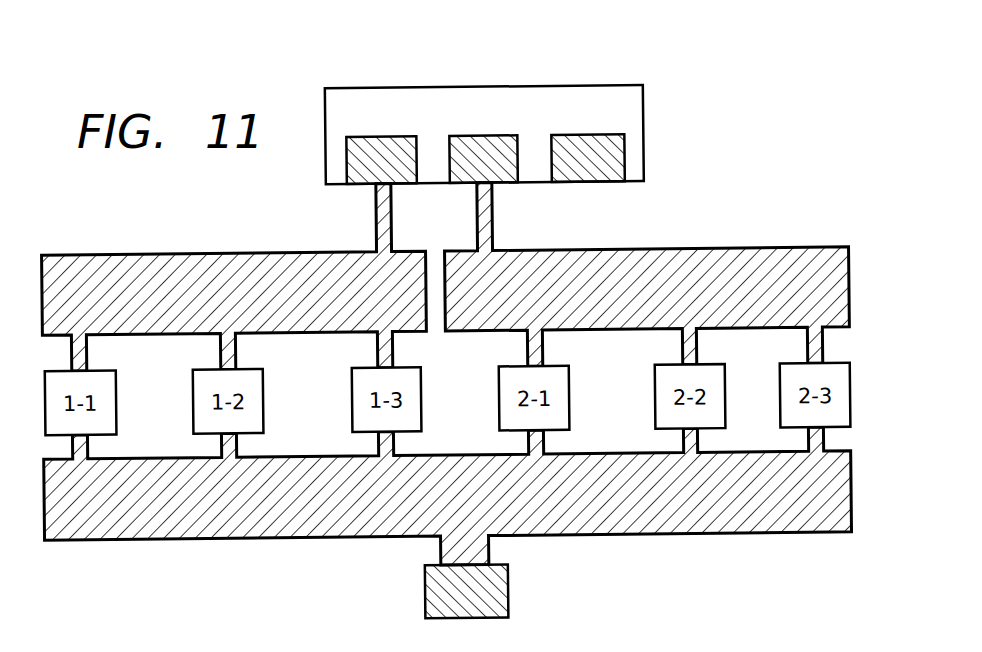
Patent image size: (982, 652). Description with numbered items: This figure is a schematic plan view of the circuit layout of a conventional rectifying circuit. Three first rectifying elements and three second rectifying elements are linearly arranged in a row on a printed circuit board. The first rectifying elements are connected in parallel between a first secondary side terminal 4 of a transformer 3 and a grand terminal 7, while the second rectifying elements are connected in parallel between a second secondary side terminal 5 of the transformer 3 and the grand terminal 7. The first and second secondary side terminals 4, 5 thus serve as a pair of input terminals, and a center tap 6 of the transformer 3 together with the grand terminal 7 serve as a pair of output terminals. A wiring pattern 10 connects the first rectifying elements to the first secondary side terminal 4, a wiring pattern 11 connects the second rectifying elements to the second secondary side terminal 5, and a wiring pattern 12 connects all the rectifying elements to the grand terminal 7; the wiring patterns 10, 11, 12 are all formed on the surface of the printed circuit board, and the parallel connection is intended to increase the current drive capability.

The transformer 3 is at (648, 110).
The first secondary side terminal 4 is at (398, 143).
The second secondary side terminal 5 is at (493, 142).
The center tap 6 is at (600, 140).
The grand terminal 7 is at (509, 582).
The wiring pattern 10 is at (106, 254).
The wiring pattern 11 is at (777, 247).
The wiring pattern 12 is at (766, 535).